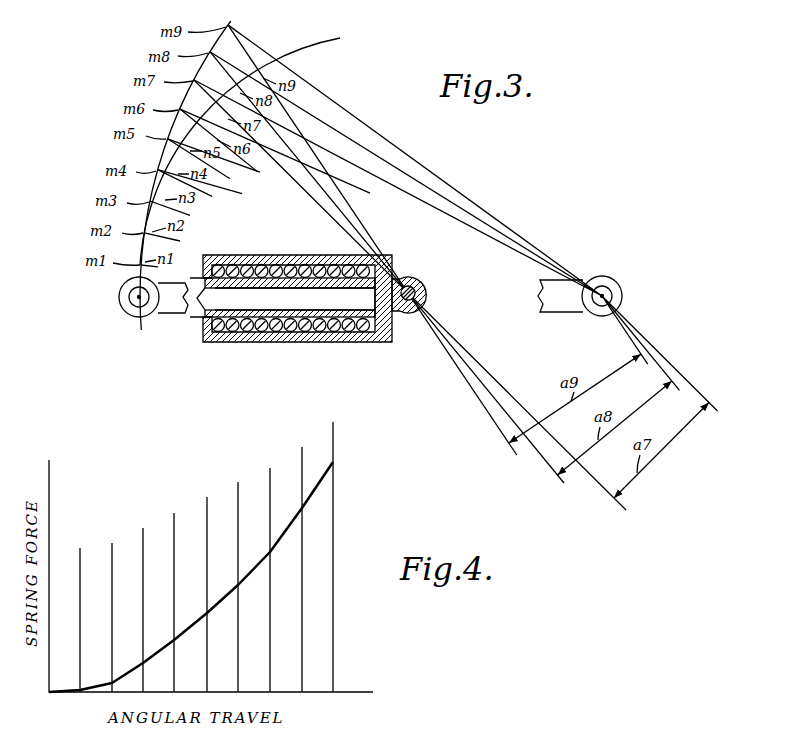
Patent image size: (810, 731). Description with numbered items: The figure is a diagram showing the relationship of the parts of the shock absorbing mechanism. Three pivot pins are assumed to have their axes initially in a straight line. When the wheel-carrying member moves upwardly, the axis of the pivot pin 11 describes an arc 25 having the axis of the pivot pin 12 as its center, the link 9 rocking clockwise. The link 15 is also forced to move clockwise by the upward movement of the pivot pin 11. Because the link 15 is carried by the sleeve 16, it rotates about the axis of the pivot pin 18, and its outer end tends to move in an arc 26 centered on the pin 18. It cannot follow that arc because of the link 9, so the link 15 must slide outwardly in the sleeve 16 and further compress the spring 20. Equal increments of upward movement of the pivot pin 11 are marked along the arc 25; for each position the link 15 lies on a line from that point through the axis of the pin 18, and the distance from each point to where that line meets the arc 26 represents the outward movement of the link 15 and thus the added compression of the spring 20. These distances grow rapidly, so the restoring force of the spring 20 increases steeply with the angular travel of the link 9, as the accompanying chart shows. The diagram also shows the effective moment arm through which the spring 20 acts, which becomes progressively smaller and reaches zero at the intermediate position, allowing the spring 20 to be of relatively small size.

The link 9 is at (172, 306).
The pivot pin 11 is at (119, 297).
The pivot pin 12 is at (613, 292).
The link 15 is at (193, 333).
The sleeve 16 is at (268, 262).
The pivot pin 18 is at (412, 283).
The spring 20 is at (291, 341).
The arc 25 is at (160, 152).
The arc 26 is at (292, 58).